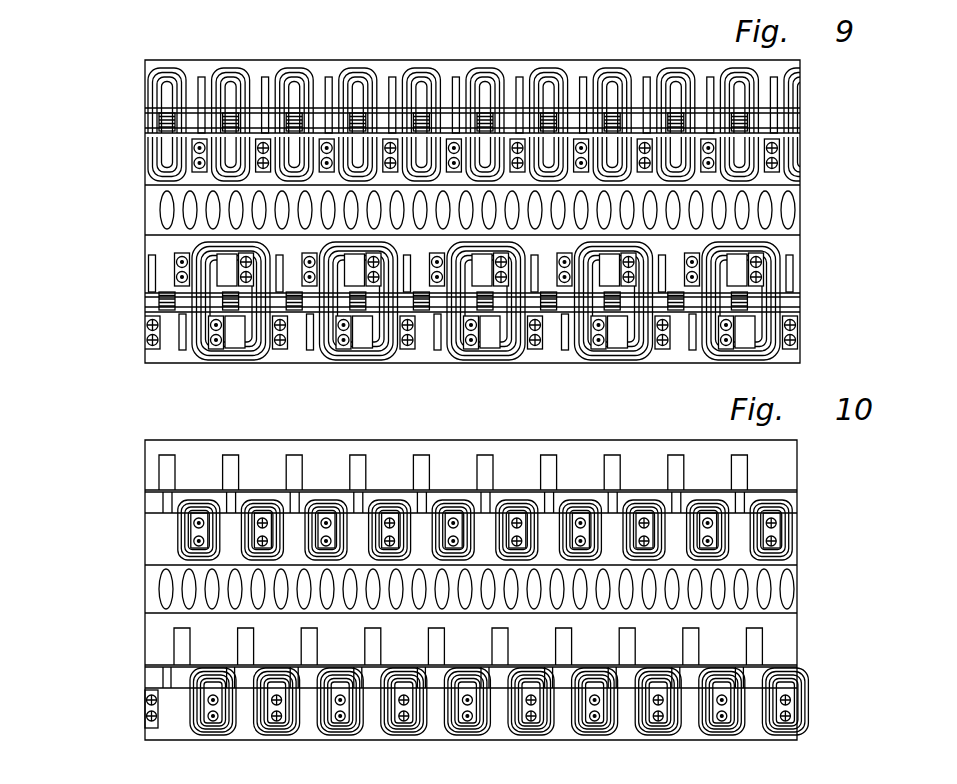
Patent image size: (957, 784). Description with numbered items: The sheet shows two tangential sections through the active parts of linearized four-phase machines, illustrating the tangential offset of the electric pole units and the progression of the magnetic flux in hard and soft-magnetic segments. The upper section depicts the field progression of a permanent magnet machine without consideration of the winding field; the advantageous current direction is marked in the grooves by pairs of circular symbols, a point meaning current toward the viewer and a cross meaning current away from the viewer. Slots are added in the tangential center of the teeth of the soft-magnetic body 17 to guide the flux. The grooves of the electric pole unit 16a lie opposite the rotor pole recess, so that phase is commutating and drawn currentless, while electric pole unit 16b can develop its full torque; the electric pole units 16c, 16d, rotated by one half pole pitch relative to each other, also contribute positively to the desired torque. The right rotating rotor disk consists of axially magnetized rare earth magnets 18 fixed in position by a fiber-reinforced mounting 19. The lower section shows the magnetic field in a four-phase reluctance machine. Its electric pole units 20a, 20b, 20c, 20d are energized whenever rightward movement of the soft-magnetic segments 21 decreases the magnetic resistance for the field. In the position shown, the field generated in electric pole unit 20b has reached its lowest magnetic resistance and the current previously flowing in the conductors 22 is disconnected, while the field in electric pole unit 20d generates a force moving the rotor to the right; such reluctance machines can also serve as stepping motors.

In FIG. 9, the electric pole unit 16a is at (143, 90).
In FIG. 9, the electric pole unit 16b is at (143, 155).
In FIG. 9, the electric pole unit 16c is at (143, 263).
In FIG. 9, the electric pole unit 16d is at (143, 330).
In FIG. 9, the soft-magnetic body 17 is at (647, 108).
In FIG. 9, the rare earth magnets 18 is at (790, 125).
In FIG. 9, the fiber-reinforced mounting 19 is at (553, 110).
In FIG. 10, the electric pole unit 20a is at (143, 468).
In FIG. 10, the electric pole unit 20b is at (143, 535).
In FIG. 10, the electric pole unit 20c is at (143, 642).
In FIG. 10, the electric pole unit 20d is at (143, 712).
In FIG. 10, the soft-magnetic segments 21 is at (796, 509).
In FIG. 10, the conductors 22 is at (768, 540).